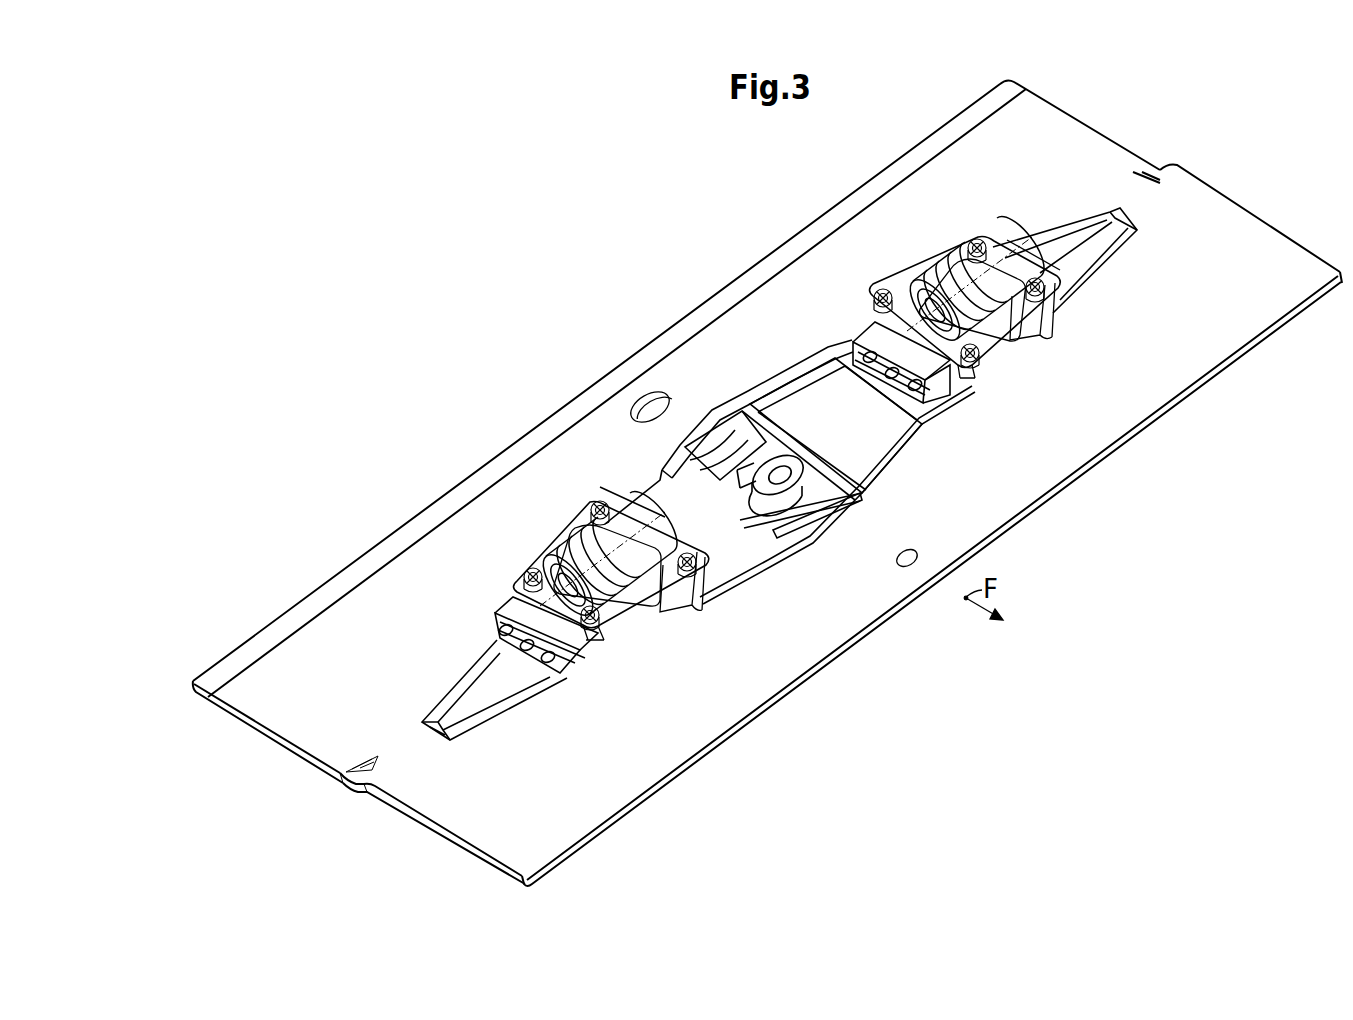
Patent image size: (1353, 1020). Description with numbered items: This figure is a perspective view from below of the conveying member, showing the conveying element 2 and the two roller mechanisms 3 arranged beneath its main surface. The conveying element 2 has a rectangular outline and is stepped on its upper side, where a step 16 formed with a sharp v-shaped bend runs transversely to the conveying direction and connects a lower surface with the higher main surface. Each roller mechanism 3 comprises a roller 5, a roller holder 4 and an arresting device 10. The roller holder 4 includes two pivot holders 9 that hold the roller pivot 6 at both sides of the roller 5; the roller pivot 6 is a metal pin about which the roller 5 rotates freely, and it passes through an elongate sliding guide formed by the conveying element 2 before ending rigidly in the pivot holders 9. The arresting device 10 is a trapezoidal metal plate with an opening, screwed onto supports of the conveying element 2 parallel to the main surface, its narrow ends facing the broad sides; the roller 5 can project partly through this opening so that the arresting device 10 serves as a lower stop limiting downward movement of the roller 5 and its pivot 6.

The conveying element 2 is at (1190, 192).
The roller mechanism 3 is at (775, 427).
The roller holder 4 is at (587, 682).
The roller 5 is at (638, 618).
The roller pivot 6 is at (528, 649).
The pivot holder 9 is at (640, 513).
The arresting device 10 is at (667, 578).
The step 16 is at (363, 789).